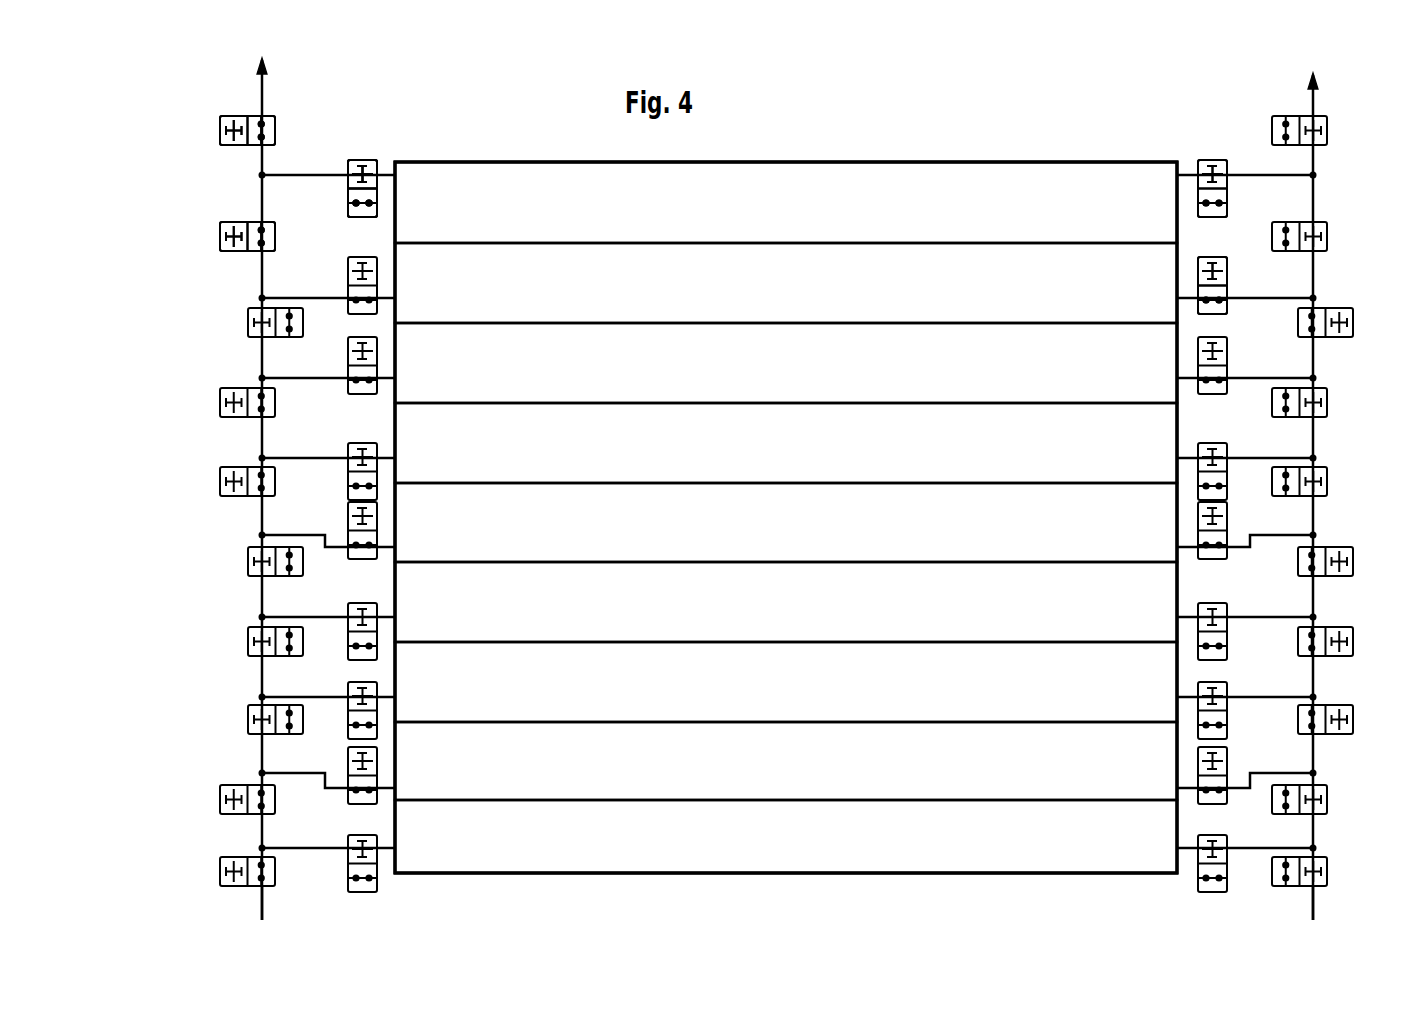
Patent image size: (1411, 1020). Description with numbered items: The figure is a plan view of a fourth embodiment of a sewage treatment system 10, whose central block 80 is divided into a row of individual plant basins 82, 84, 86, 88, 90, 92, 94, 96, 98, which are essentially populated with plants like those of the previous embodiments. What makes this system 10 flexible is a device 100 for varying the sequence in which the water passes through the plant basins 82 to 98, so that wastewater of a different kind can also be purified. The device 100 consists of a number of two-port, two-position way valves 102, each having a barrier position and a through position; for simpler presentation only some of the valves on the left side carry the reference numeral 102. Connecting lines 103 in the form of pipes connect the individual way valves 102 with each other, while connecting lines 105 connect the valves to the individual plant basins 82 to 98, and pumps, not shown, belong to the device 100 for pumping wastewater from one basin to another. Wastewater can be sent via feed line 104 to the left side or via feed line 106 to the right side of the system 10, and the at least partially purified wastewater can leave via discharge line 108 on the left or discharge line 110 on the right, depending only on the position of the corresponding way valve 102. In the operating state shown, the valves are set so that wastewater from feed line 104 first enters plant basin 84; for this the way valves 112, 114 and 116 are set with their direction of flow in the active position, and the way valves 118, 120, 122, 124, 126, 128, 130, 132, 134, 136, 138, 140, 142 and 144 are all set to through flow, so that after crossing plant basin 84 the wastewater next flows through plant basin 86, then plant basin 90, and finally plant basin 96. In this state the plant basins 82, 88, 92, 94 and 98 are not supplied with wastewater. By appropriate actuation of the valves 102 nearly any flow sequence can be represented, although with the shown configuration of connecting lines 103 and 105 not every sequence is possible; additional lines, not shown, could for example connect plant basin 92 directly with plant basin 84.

The sewage treatment system 10 is at (972, 160).
The manifold block 80 is at (816, 162).
The plant basin 82 is at (801, 219).
The plant basin 84 is at (801, 300).
The plant basin 86 is at (801, 379).
The plant basin 88 is at (801, 459).
The plant basin 90 is at (801, 539).
The plant basin 92 is at (801, 627).
The plant basin 94 is at (801, 697).
The plant basin 96 is at (801, 776).
The plant basin 98 is at (801, 854).
The device for varying the sequence 100 is at (360, 95).
The 2/2-way valve 102 is at (216, 116).
The connecting line 103 is at (265, 160).
The feed line 104 is at (263, 94).
The connecting line 105 is at (385, 172).
The feed line 106 is at (1314, 104).
The discharge line 108 is at (264, 905).
The discharge line 110 is at (1315, 905).
The 2/2-way valve 112 is at (246, 116).
The 2/2-way valve 114 is at (243, 222).
The 2/2-way valve 116 is at (348, 282).
The 2/2-way valve 118 is at (1228, 280).
The 2/2-way valve 120 is at (1330, 308).
The 2/2-way valve 122 is at (1228, 356).
The 2/2-way valve 124 is at (348, 360).
The 2/2-way valve 126 is at (220, 402).
The 2/2-way valve 128 is at (220, 482).
The 2/2-way valve 130 is at (348, 530).
The 2/2-way valve 132 is at (1228, 530).
The 2/2-way valve 134 is at (1331, 547).
The 2/2-way valve 136 is at (1331, 627).
The 2/2-way valve 138 is at (1331, 705).
The 2/2-way valve 140 is at (1228, 768).
The 2/2-way valve 142 is at (348, 768).
The 2/2-way valve 144 is at (240, 785).